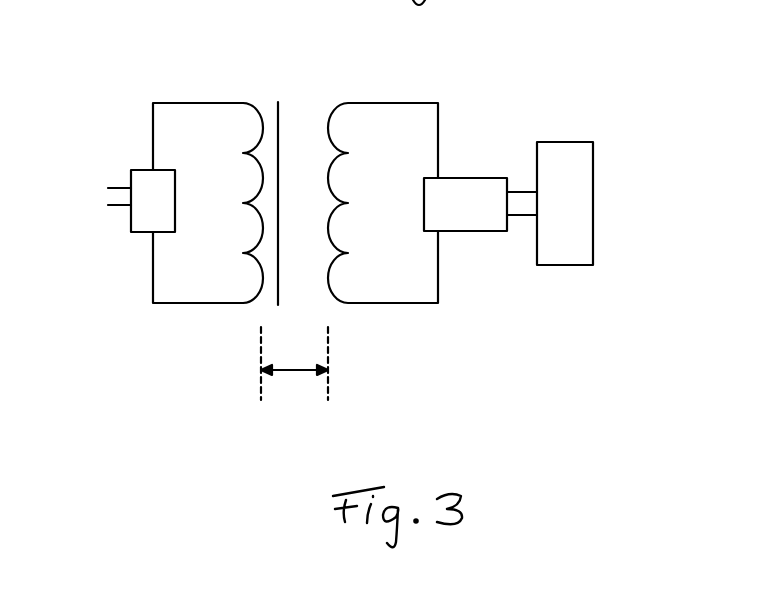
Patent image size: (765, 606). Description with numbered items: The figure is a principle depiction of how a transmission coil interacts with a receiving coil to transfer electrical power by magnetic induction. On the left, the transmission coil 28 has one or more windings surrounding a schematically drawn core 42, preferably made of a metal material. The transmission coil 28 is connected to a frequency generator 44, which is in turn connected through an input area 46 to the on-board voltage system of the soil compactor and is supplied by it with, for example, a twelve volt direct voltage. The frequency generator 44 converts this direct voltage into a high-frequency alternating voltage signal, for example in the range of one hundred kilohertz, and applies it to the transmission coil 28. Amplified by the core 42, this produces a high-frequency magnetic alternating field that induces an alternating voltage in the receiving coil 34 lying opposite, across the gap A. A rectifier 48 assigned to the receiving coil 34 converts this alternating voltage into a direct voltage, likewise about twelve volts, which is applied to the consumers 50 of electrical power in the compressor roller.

The transmission coil 28 is at (255, 106).
The receiving coil 34 is at (332, 127).
The core 42 is at (278, 277).
The frequency generator 44 is at (133, 170).
The input area 46 is at (112, 215).
The rectifier 48 is at (455, 178).
The consumers 50 is at (593, 199).
The gap distance A is at (288, 370).